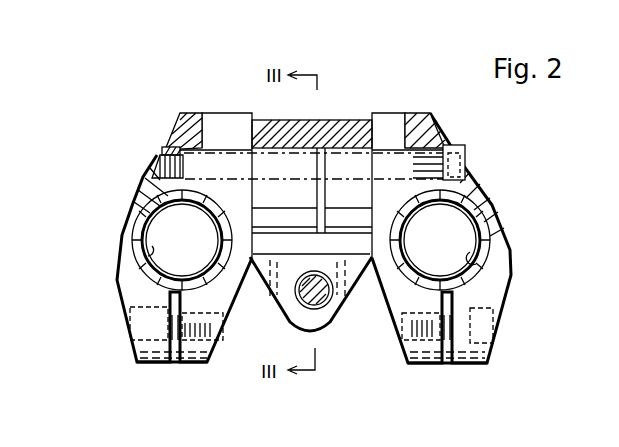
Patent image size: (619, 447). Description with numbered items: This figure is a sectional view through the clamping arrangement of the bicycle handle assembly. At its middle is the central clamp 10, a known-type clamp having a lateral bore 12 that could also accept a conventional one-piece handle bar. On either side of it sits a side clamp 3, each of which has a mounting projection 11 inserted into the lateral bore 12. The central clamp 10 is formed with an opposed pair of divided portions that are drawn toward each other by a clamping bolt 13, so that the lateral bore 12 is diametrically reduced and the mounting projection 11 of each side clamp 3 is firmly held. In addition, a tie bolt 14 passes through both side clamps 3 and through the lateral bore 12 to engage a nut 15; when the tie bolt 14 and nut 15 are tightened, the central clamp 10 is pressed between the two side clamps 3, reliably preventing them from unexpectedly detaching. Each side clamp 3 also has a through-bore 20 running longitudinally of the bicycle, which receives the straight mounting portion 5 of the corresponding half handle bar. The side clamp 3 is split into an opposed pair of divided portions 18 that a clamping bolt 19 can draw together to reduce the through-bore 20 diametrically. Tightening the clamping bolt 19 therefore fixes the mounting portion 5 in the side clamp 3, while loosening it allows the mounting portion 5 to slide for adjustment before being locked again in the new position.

The side clamp 3 is at (179, 110).
The mounting portion 5 is at (130, 238).
The central clamp 10 is at (357, 123).
The mounting projection 11 is at (277, 146).
The lateral bore 12 is at (302, 156).
The clamping bolt 13 is at (322, 302).
The tie bolt 14 is at (463, 148).
The nut 15 is at (168, 148).
The divided portions 18 is at (192, 364).
The clamping bolt 19 is at (132, 327).
The through-bore 20 is at (147, 262).